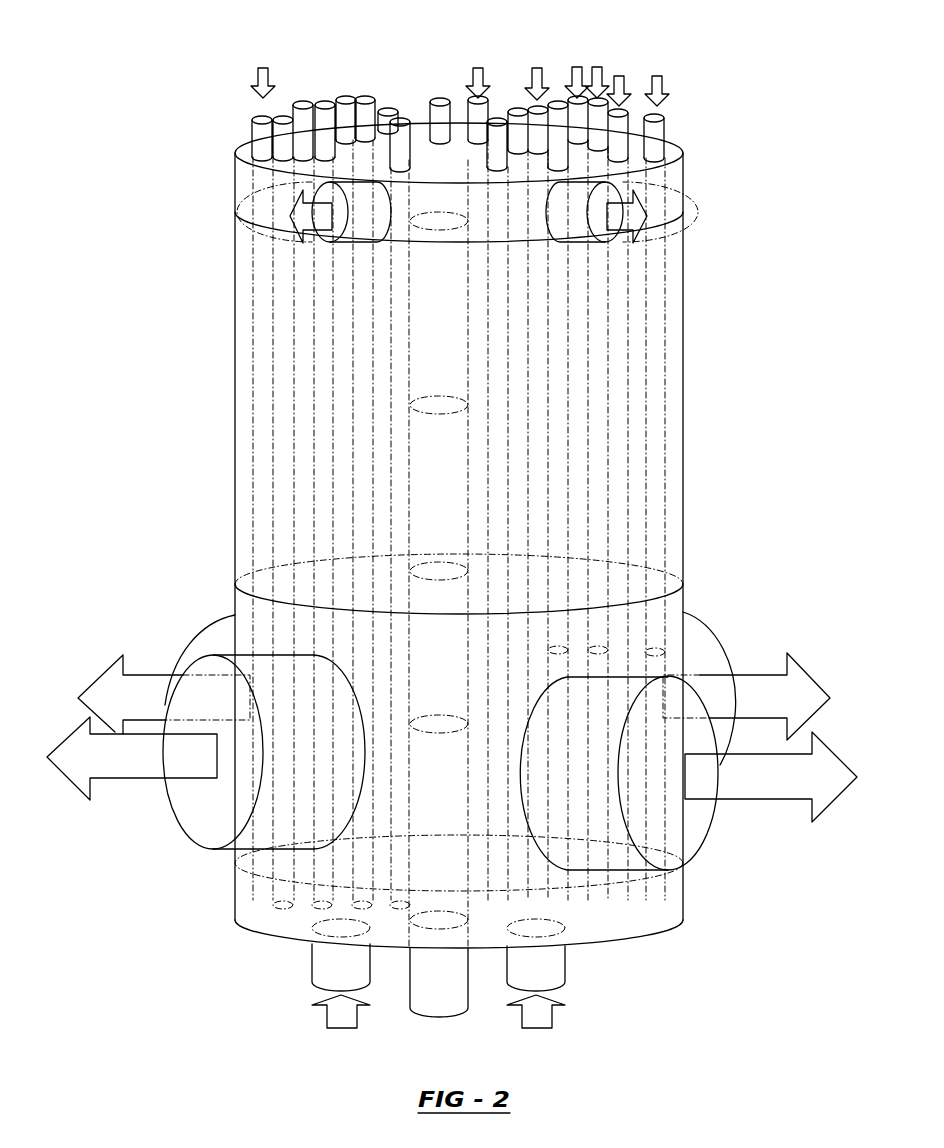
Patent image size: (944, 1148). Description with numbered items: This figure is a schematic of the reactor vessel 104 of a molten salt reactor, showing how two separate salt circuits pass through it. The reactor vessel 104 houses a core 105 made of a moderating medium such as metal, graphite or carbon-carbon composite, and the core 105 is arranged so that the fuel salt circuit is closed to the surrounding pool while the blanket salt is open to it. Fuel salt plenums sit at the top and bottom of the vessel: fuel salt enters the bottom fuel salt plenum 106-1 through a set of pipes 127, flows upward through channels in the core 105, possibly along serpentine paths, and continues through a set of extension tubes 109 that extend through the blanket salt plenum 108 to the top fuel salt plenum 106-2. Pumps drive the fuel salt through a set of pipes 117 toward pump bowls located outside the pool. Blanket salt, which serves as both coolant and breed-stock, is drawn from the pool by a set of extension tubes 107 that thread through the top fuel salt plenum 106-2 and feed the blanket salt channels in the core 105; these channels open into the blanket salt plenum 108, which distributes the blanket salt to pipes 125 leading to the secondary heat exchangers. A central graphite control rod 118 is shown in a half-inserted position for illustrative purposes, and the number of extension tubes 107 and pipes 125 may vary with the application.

The reactor vessel 104 is at (131, 274).
The core 105 is at (235, 440).
The bottom fuel salt plenum 106-1 is at (683, 892).
The top fuel salt plenum 106-2 is at (678, 183).
The extension tubes 107 is at (363, 102).
The blanket salt plenum 108 is at (683, 595).
The extension tubes 109 is at (645, 650).
The pipes 117 is at (343, 250).
The central graphite control rod 118 is at (409, 992).
The pipes 125 is at (205, 637).
The pipes 127 is at (312, 963).